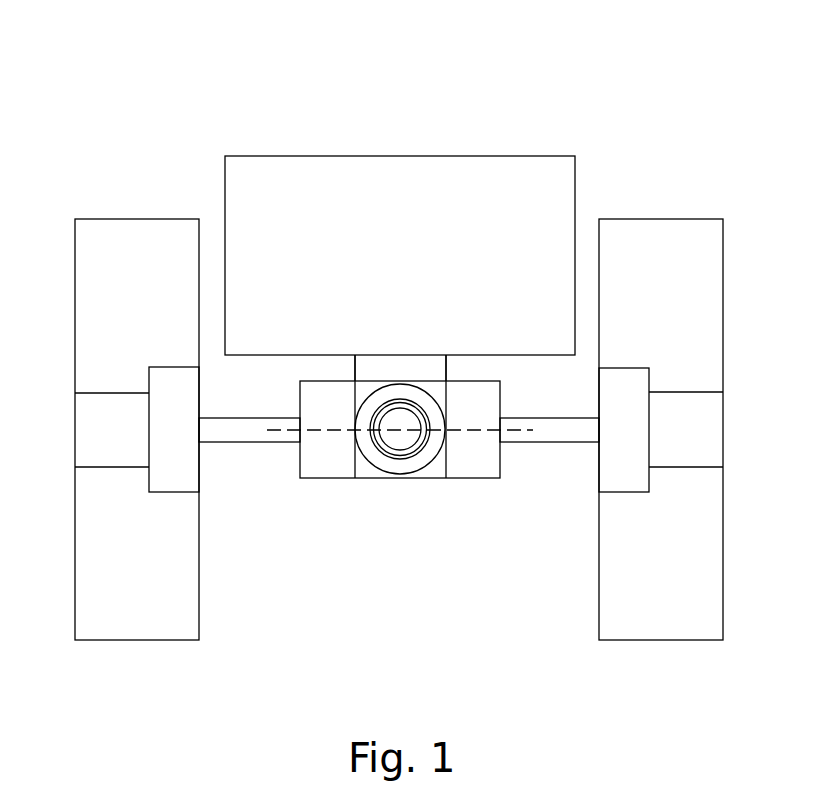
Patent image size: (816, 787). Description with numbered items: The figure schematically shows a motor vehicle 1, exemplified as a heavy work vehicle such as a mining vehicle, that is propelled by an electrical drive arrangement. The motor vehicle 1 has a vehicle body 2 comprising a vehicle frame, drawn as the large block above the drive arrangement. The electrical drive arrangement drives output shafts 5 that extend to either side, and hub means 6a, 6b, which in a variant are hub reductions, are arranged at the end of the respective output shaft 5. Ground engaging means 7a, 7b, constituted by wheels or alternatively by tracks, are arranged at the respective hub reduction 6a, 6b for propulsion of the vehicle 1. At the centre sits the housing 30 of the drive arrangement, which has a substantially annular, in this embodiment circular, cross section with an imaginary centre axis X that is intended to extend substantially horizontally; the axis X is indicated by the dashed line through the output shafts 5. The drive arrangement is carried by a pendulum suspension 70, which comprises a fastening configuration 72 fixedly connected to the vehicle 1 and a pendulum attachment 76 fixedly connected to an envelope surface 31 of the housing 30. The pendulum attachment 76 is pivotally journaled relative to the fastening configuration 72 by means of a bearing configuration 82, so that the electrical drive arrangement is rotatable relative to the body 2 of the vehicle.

The motor vehicle 1 is at (650, 93).
The vehicle body 2 is at (398, 156).
The output shafts 5 is at (223, 443).
The hub means 6a is at (146, 470).
The hub means 6b is at (651, 467).
The ground engaging means 7a is at (135, 641).
The ground engaging means 7b is at (660, 641).
The housing 30 is at (449, 479).
The envelope surface 31 is at (480, 480).
The pendulum suspension 70 is at (410, 466).
The fastening configuration 72 is at (355, 365).
The pendulum attachment 76 is at (382, 447).
The bearing configuration 82 is at (422, 408).
The centre axis X is at (515, 431).